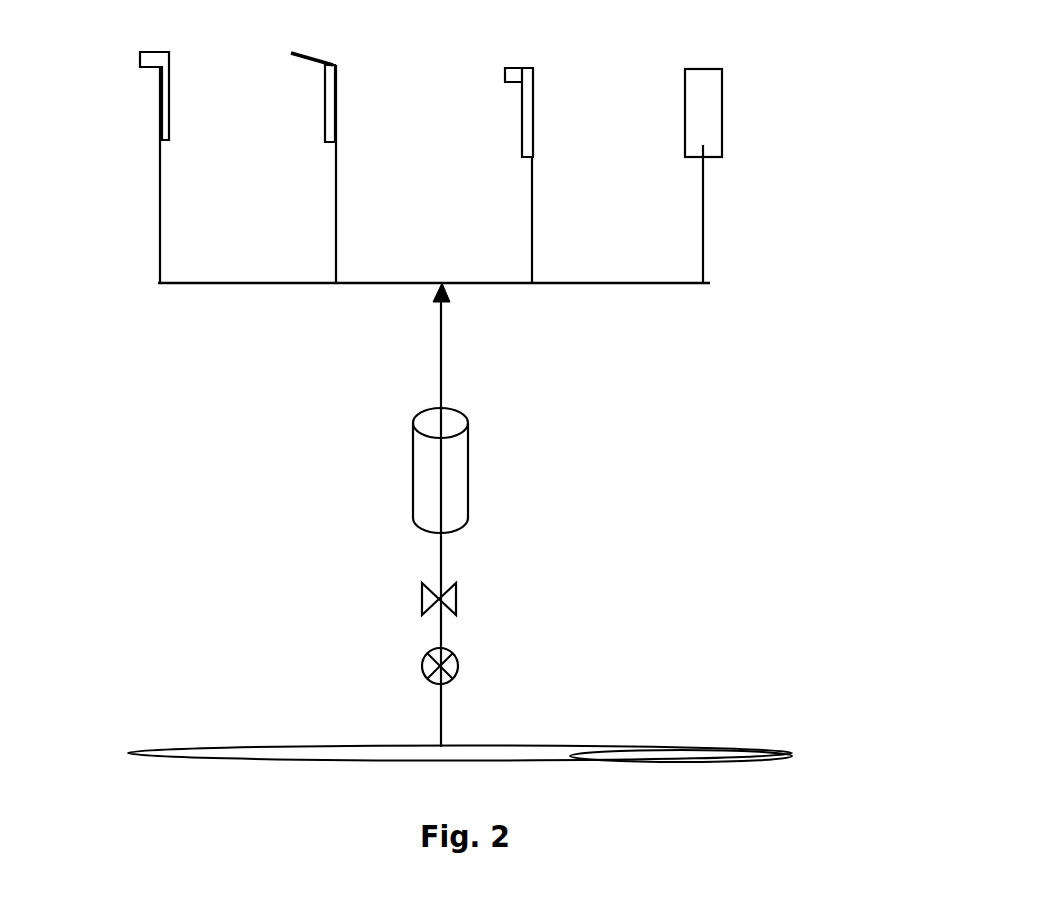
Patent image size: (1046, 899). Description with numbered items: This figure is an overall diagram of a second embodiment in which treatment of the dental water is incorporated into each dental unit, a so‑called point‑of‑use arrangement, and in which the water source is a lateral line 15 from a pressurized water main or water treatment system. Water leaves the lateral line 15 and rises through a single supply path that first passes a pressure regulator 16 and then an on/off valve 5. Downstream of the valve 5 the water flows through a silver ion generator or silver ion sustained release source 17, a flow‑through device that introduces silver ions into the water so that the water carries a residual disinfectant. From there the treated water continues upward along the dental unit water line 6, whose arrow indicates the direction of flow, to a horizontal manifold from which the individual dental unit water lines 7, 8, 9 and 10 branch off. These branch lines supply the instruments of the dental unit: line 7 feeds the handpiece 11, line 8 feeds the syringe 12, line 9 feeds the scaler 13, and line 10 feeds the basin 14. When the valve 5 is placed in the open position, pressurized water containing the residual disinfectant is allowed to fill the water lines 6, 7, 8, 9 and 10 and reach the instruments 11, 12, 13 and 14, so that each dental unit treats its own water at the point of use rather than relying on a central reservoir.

The valve 5 is at (553, 615).
The dental unit water line 6 is at (434, 345).
The dental unit water line 7 is at (141, 175).
The dental unit water line 8 is at (310, 174).
The dental unit water line 9 is at (506, 220).
The dental unit water line 10 is at (678, 214).
The instrument (handpiece) 11 is at (110, 80).
The instrument (syringe) 12 is at (297, 81).
The instrument (scaler) 13 is at (501, 89).
The instrument (basin) 14 is at (696, 89).
The lateral line 15 is at (460, 775).
The pressure regulator 16 is at (250, 697).
The silver ion generator or silver ion sustained release source 17 is at (612, 495).